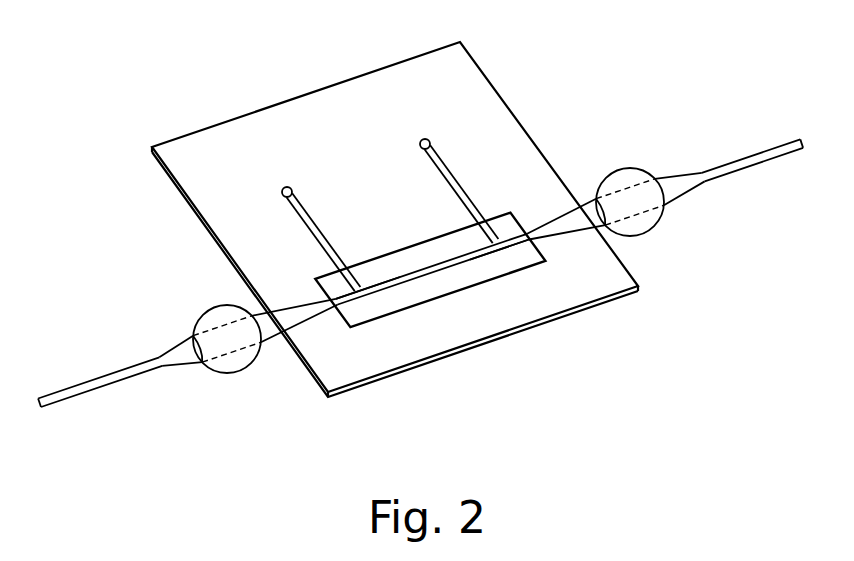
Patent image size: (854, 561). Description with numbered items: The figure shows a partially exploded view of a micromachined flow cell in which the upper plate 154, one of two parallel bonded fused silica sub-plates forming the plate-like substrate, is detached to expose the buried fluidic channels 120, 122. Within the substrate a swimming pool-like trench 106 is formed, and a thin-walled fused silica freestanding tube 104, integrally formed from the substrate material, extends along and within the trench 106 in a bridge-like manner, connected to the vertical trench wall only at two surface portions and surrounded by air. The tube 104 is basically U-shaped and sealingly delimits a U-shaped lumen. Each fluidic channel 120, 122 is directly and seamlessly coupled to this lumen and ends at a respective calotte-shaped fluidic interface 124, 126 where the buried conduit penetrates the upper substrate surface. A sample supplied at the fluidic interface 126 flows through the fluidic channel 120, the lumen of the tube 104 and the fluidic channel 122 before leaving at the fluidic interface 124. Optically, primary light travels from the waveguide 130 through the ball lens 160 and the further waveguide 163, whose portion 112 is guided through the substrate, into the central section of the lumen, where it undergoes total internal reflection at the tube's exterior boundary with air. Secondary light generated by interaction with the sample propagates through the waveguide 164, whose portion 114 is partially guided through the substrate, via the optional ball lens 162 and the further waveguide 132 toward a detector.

The fluidic channel 120 is at (290, 230).
The upper plate 154 is at (522, 175).
The trench 106 is at (460, 278).
The freestanding tube 104 is at (395, 285).
The further waveguide 163 is at (350, 305).
The waveguide 164 is at (526, 270).
The fluidic channel 122 is at (443, 162).
The fluidic interface 124 is at (425, 139).
The fluidic interface 126 is at (287, 185).
The waveguide 130 is at (67, 395).
The further waveguide 132 is at (745, 170).
The ball lens 160 is at (225, 358).
The ball lens 162 is at (653, 222).
The part of the further waveguide guided through the substrate 112 is at (299, 316).
The part of the waveguide guided through the substrate 114 is at (582, 222).